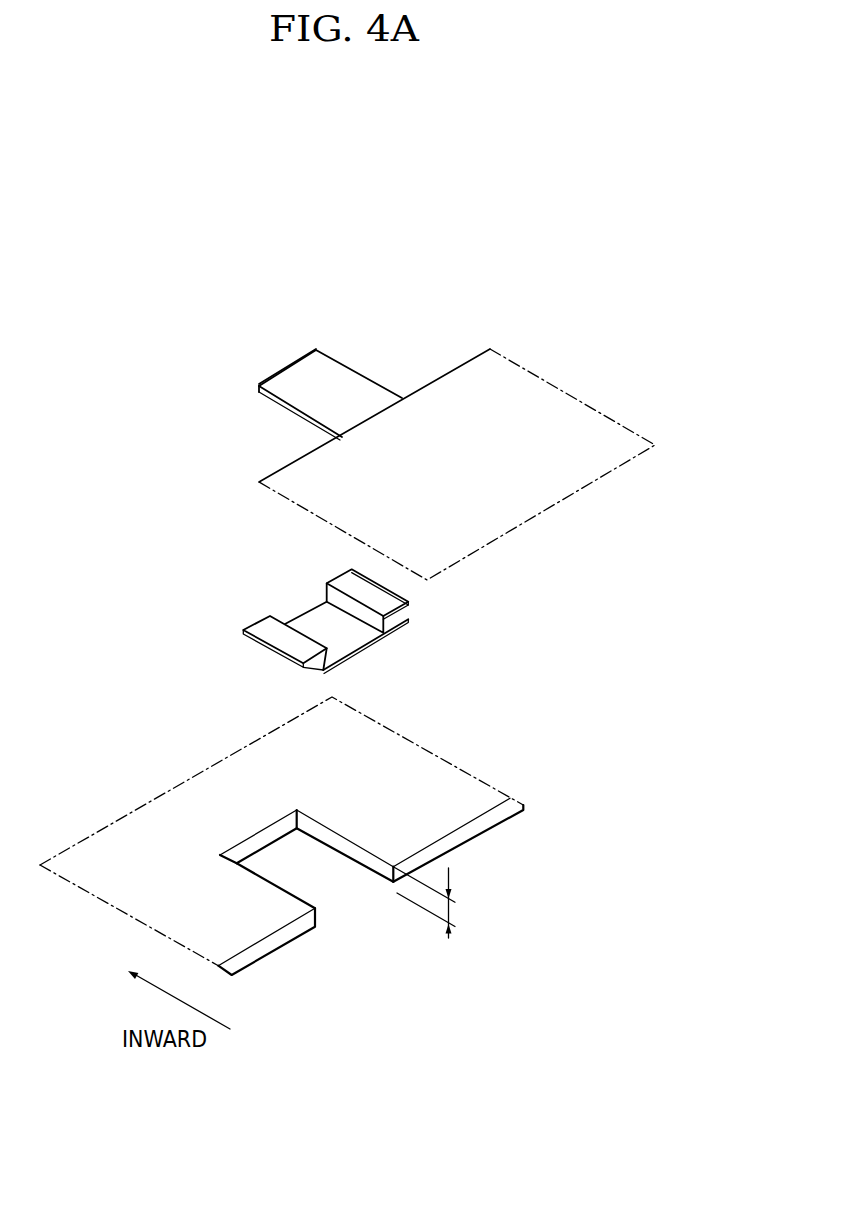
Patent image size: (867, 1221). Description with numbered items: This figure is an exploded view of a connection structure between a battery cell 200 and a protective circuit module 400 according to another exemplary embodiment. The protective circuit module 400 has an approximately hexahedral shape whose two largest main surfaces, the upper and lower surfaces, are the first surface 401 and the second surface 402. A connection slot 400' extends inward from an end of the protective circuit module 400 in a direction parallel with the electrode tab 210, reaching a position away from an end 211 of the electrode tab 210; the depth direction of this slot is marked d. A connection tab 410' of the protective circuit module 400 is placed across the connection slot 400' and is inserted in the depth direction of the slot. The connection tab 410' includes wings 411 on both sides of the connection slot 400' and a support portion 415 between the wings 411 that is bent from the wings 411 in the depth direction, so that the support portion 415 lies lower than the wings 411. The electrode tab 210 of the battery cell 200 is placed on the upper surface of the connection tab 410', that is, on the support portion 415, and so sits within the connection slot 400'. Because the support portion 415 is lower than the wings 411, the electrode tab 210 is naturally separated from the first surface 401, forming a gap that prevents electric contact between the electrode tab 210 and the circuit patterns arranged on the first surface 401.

The battery cell 200 is at (456, 437).
The electrode tab 210 is at (323, 367).
The end of the electrode tab 211 is at (287, 368).
The protective circuit module 400 is at (301, 852).
The connection slot 400' is at (319, 895).
The first surface 401 is at (245, 935).
The second surface 402 is at (462, 850).
The connection tab 410' is at (266, 614).
The wings 411 is at (267, 632).
The support portion 415 is at (313, 628).